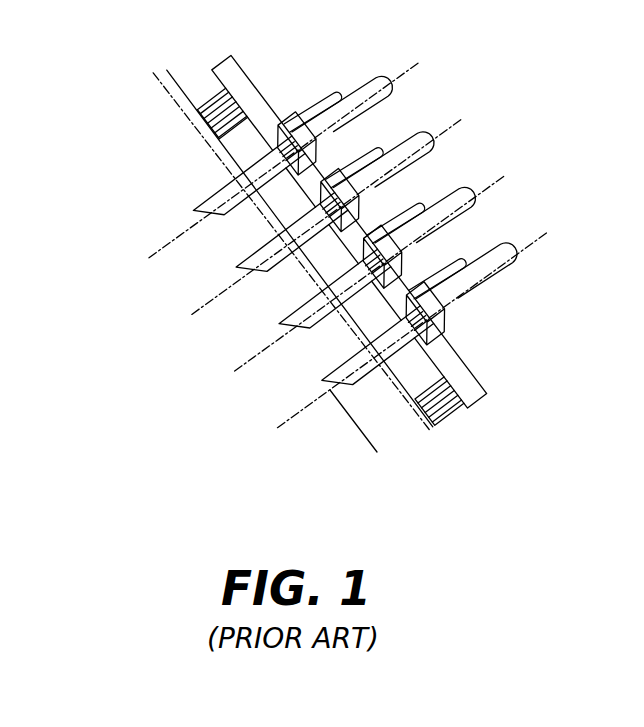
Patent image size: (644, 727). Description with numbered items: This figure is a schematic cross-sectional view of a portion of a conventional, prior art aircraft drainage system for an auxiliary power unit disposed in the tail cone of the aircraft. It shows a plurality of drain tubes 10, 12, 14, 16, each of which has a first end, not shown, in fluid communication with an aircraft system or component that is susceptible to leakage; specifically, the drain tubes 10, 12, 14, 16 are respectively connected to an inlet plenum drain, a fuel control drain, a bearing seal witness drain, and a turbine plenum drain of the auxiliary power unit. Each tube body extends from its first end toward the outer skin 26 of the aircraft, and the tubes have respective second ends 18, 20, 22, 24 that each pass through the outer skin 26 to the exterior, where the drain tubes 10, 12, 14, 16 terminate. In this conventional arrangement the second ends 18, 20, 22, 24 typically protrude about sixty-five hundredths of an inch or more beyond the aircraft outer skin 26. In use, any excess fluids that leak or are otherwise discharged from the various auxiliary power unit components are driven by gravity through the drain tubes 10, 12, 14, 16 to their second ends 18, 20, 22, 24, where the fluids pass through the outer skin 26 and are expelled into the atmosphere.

The drain tube 10 is at (388, 85).
The drain tube 12 is at (435, 140).
The drain tube 14 is at (463, 205).
The drain tube 16 is at (513, 260).
The second end 18 is at (208, 173).
The second end 20 is at (247, 253).
The second end 22 is at (283, 313).
The second end 24 is at (324, 369).
The outer skin 26 is at (392, 383).